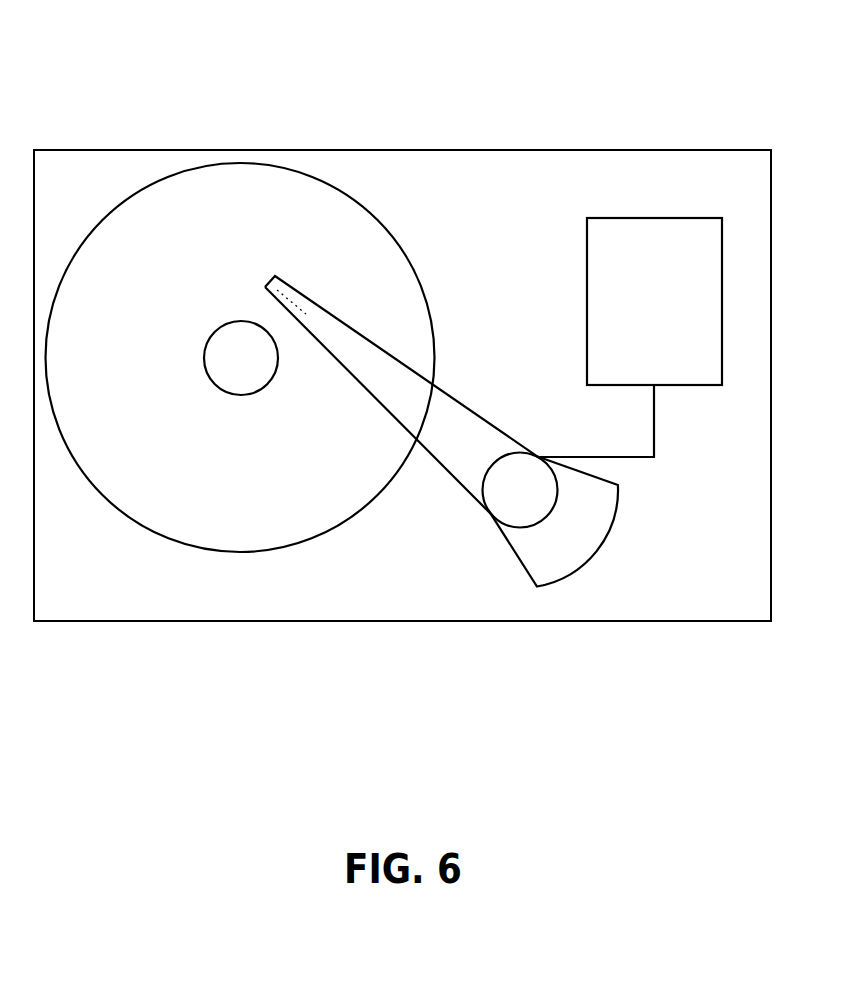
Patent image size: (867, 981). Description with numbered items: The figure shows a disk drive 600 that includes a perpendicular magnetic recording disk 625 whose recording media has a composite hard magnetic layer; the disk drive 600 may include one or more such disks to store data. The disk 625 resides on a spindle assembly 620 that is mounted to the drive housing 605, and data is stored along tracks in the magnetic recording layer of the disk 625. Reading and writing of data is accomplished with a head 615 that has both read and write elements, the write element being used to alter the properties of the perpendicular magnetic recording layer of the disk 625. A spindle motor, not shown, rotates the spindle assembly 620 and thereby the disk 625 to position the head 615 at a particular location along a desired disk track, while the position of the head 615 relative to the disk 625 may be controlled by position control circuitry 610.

The disk drive 600 is at (397, 69).
The drive housing 605 is at (478, 150).
The position control circuitry 610 is at (635, 284).
The head 615 is at (293, 287).
The spindle assembly 620 is at (222, 370).
The disk 625 is at (145, 530).